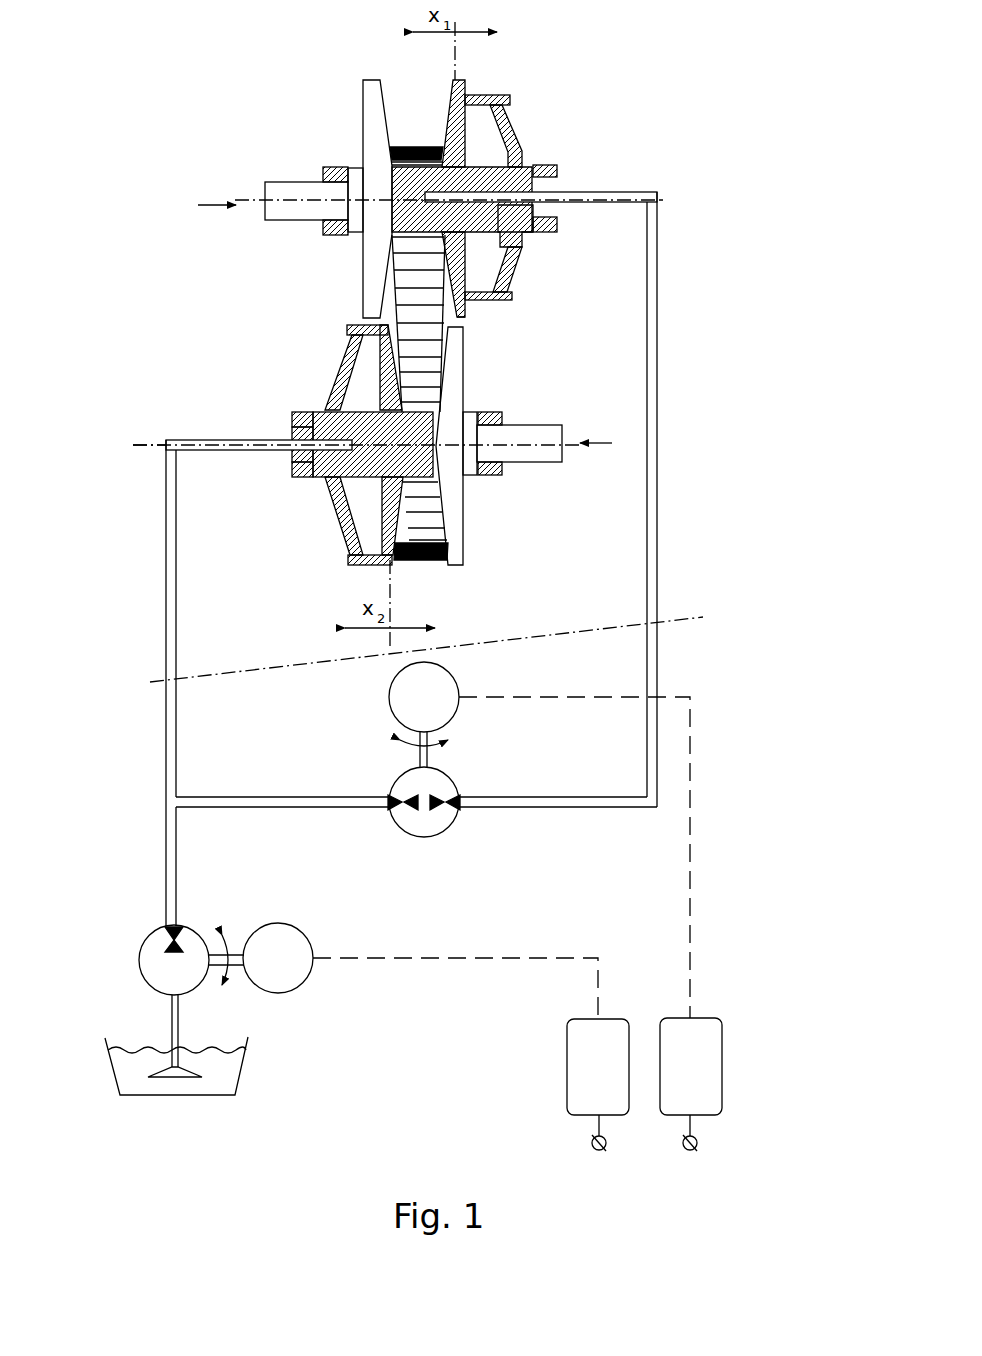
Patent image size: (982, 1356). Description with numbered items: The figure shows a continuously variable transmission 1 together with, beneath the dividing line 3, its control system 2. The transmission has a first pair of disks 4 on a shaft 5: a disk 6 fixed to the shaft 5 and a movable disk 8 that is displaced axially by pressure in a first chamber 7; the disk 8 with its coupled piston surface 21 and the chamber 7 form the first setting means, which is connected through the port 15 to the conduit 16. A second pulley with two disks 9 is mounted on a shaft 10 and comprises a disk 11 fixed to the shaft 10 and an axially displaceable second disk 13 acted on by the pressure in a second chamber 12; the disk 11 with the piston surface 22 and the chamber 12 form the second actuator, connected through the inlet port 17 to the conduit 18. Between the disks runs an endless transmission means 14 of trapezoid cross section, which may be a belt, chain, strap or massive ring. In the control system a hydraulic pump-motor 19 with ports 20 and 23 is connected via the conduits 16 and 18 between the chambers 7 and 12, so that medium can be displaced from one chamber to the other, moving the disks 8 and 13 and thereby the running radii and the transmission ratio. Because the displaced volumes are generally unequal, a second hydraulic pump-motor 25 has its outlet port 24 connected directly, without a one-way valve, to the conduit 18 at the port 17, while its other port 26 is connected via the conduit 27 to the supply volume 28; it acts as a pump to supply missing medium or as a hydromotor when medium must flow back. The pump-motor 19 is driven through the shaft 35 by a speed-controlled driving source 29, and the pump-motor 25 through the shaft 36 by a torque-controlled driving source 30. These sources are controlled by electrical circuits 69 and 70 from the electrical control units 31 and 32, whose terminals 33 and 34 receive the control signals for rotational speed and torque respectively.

The continuously variable transmission 1 is at (94, 91).
The control system 2 is at (94, 1141).
The dividing line 3 is at (683, 617).
The first pair of disks 4 is at (184, 217).
The shaft 5 is at (275, 207).
The disk 6 is at (376, 295).
The first chamber 7 is at (480, 268).
The movable disk 8 is at (465, 317).
The second pulley with two disks 9 is at (629, 452).
The shaft 10 is at (547, 447).
The disk 11 is at (453, 543).
The second chamber 12 is at (368, 522).
The second disk 13 is at (390, 566).
The endless transmission means 14 is at (410, 148).
The port 15 is at (563, 186).
The conduit 16 is at (658, 535).
The inlet port 17 is at (290, 456).
The conduit 18 is at (165, 549).
The hydraulic pump-motor 19 is at (428, 826).
The port 20 is at (462, 813).
The piston surface 21 is at (465, 128).
The piston surface 22 is at (383, 370).
The port 23 is at (386, 813).
The outlet port 24 is at (163, 921).
The second hydraulic pump-motor 25 is at (148, 958).
The port 26 is at (166, 999).
The conduit 27 is at (185, 1006).
The supply volume 28 is at (230, 1061).
The driving source 29 is at (398, 687).
The driving source 30 is at (293, 968).
The electrical control unit 31 is at (707, 1040).
The electrical control unit 32 is at (573, 1068).
The terminal 33 is at (697, 1150).
The terminal 34 is at (595, 1149).
The shaft 35 is at (415, 757).
The shaft 36 is at (237, 953).
The electrical circuit 69 is at (693, 852).
The electrical circuit 70 is at (438, 960).